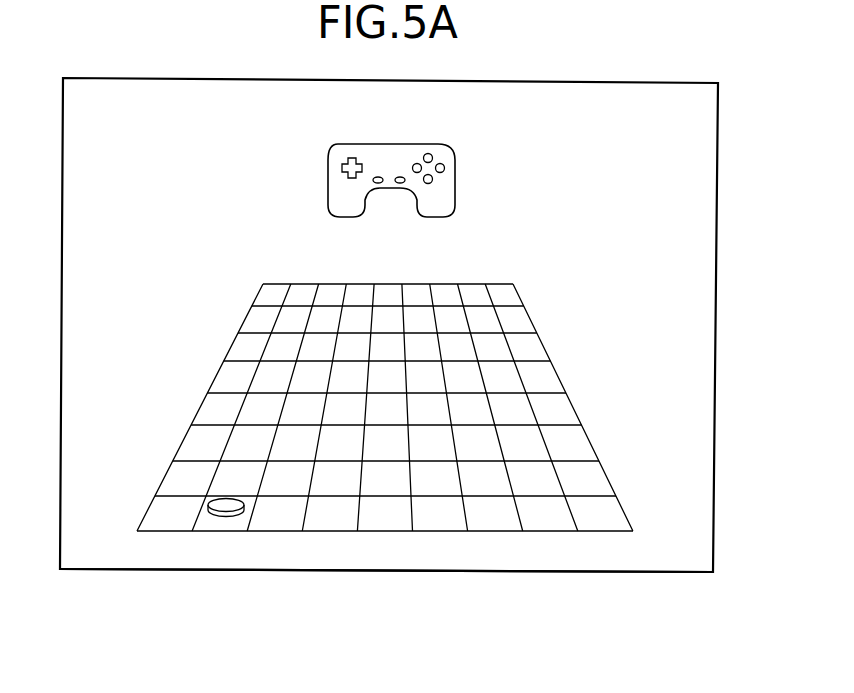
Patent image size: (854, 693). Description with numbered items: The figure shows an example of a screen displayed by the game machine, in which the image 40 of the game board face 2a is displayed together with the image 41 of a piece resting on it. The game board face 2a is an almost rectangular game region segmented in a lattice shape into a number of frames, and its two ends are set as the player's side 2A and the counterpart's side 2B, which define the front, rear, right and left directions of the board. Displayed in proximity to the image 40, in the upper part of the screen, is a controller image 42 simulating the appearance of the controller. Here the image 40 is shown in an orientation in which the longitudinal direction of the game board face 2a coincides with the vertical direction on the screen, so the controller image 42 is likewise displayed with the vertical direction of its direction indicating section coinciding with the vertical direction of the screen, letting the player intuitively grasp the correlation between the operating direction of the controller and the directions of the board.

The counterpart's side 2B is at (440, 272).
The controller image 42 is at (313, 179).
The image of the game board face 40 is at (206, 384).
The game board face 2a is at (537, 375).
The image of the piece 41 is at (208, 495).
The player's side 2A is at (424, 554).